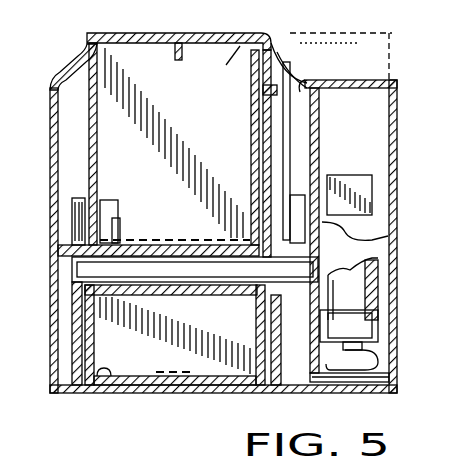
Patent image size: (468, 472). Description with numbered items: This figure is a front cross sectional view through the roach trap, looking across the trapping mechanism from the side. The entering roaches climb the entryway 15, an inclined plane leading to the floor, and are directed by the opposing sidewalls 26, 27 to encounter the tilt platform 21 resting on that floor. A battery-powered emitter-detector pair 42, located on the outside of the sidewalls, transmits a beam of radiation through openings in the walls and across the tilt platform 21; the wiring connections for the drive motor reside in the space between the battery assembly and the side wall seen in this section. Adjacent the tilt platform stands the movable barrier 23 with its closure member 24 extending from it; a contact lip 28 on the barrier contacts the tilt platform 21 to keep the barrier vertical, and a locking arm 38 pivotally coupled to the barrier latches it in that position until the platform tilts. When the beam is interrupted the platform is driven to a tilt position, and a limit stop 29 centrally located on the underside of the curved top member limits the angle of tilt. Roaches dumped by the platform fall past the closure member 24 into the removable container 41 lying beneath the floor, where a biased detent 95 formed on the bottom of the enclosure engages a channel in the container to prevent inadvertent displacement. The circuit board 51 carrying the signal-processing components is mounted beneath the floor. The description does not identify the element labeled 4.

The housing 4 is at (20, 137).
The entryway 15 is at (125, 10).
The tilt platform 21 is at (100, 270).
The movable barrier 23 is at (248, 27).
The closure member 24 is at (189, 27).
The sidewall 26 is at (87, 140).
The sidewall 27 is at (300, 34).
The contact lip 28 is at (9, 10).
The limit stop 29 is at (66, 466).
The locking arm 38 is at (103, 228).
The removable container 41 is at (83, 393).
The emitter-detector pair 42 is at (290, 68).
The circuit board 51 is at (57, 287).
The biased detent 95 is at (183, 396).